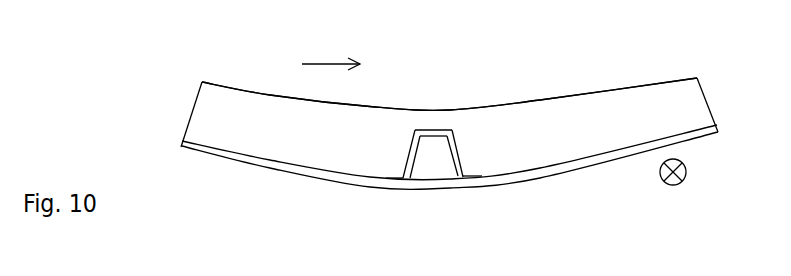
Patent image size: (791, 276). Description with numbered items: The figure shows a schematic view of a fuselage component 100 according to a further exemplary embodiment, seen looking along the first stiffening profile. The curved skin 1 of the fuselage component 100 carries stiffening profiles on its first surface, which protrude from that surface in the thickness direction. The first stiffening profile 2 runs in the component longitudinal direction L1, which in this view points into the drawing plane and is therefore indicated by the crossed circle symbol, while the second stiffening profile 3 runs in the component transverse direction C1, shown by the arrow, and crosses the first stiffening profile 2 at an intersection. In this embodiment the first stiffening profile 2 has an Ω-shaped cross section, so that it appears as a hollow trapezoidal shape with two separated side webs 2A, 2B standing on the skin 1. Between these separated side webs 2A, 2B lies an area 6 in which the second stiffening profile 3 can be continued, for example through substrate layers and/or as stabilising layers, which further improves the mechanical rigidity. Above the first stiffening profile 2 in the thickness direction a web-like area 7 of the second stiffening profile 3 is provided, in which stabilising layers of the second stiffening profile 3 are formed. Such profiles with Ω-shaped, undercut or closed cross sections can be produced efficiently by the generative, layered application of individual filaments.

The fuselage component 100 is at (449, 128).
The skin 1 is at (580, 170).
The first stiffening profile 2 is at (426, 111).
The side web of the first stiffening profile 2A is at (408, 157).
The side web of the first stiffening profile 2B is at (458, 156).
The second stiffening profile 3 is at (500, 103).
The area between side webs 6 is at (431, 153).
The web-like area 7 is at (458, 115).
The component transverse direction C1 is at (312, 64).
The component longitudinal direction L1 is at (677, 185).